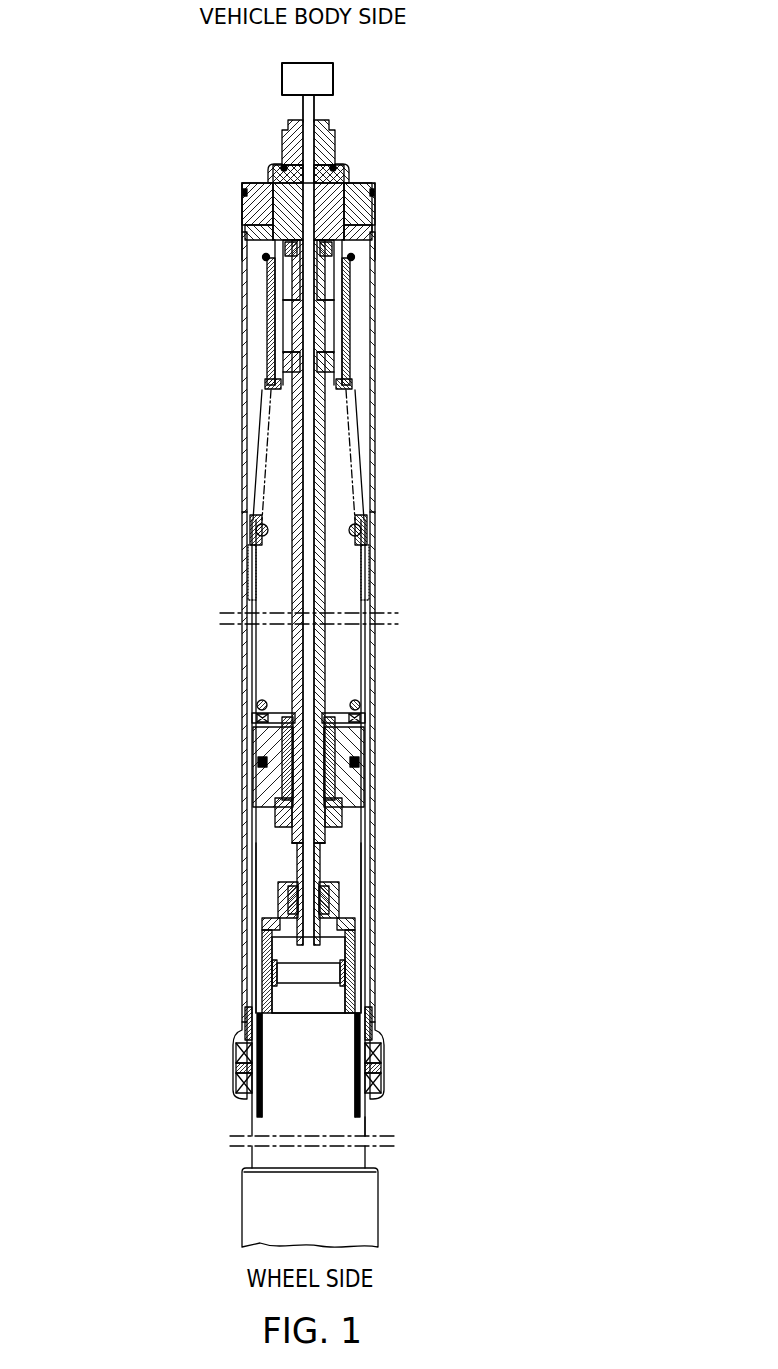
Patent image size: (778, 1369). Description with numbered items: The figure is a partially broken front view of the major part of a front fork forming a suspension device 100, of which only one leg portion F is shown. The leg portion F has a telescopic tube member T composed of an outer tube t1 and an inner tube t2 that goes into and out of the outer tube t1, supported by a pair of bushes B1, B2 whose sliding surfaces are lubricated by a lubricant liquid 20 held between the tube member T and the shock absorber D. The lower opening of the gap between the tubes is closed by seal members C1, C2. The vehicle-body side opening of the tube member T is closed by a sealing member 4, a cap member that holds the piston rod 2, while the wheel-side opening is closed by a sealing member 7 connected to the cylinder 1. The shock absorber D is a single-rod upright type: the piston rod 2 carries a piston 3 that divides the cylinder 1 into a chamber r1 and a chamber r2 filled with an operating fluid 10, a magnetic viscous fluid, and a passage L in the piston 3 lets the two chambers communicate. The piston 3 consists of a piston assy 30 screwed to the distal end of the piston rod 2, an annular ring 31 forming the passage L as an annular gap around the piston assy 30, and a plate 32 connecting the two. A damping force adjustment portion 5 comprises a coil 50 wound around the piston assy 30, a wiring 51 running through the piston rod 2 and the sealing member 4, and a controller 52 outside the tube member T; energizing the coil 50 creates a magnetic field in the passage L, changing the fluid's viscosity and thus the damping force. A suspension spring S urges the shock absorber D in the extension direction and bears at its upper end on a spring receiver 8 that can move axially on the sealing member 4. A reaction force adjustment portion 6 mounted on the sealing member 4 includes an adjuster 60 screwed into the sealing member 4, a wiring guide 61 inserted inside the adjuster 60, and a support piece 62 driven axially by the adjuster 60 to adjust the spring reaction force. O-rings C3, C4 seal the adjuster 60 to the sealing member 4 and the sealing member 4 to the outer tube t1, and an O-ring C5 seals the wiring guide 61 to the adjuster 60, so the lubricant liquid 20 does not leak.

The suspension device 100 is at (440, 100).
The leg portion F is at (166, 181).
The controller 52 is at (333, 80).
The reaction force adjustment portion 6 is at (350, 127).
The adjuster 60 is at (282, 145).
The sealing member 4 is at (355, 178).
The wiring guide 61 is at (340, 205).
The O-ring C3 is at (280, 168).
The O-ring C4 is at (242, 194).
The O-ring C5 is at (264, 258).
The support piece 62 is at (282, 276).
The spring receiver 8 is at (343, 292).
The tube member T is at (236, 410).
The wiring 51 is at (340, 438).
The piston rod 2 is at (325, 495).
The damping force adjustment portion 5 is at (325, 585).
The suspension spring S is at (360, 530).
The outer tube t1 is at (242, 512).
The bush B1 is at (248, 568).
The cylinder 1 is at (250, 866).
The lubricant liquid 20 is at (282, 680).
The operating fluid 10 is at (270, 895).
The shock absorber D is at (348, 680).
The chamber r1 is at (345, 852).
The plate 32 is at (350, 918).
The ring 31 is at (262, 950).
The piston 3 is at (256, 975).
The coil 50 is at (346, 972).
The piston assy 30 is at (298, 1000).
The passage L is at (357, 1005).
The bush B2 is at (372, 1035).
The chamber r2 is at (297, 1062).
The seal member C1 is at (245, 1080).
The seal member C2 is at (382, 1062).
The inner tube t2 is at (372, 1127).
The sealing member 7 is at (365, 1222).